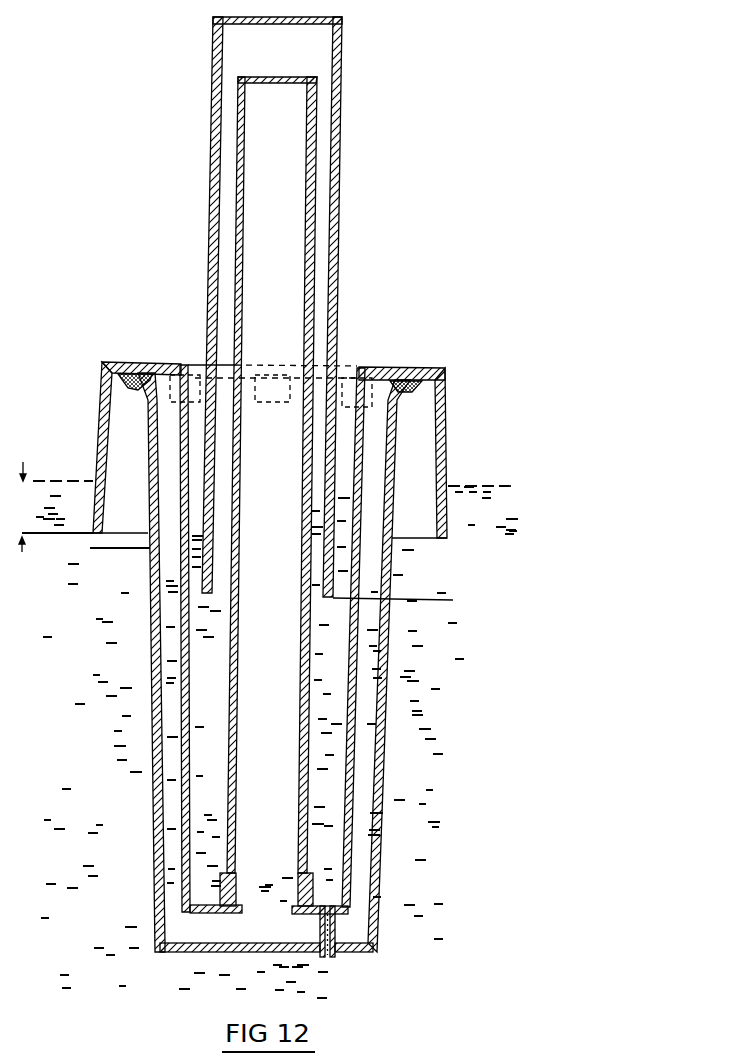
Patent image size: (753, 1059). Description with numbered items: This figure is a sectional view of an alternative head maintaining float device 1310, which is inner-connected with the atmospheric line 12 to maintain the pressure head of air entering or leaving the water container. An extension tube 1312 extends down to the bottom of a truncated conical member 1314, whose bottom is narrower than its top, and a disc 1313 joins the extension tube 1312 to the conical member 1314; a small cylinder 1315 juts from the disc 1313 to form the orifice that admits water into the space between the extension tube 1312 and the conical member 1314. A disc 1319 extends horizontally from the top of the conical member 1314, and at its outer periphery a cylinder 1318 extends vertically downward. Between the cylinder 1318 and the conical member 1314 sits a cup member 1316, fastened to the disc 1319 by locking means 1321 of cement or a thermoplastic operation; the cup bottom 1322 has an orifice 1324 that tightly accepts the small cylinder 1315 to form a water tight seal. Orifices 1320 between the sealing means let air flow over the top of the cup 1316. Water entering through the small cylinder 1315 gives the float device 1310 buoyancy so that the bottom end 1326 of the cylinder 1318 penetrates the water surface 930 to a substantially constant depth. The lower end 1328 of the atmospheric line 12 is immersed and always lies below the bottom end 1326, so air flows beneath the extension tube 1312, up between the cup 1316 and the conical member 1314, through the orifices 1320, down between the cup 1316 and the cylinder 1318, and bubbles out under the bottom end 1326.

The atmospheric line 12 is at (343, 54).
The extension tube 1312 is at (313, 208).
The head maintaining float device 1310 is at (507, 292).
The orifices 1320 is at (268, 385).
The disc 1319 is at (365, 368).
The locking means 1321 is at (122, 380).
The water surface 930 is at (462, 487).
The cylinder 1318 is at (448, 527).
The bottom end 1326 is at (100, 533).
The lower end 1328 is at (414, 609).
The truncated conical member 1314 is at (185, 748).
The cup member 1316 is at (375, 920).
The disc 1313 is at (205, 913).
The bottom 1322 is at (173, 948).
The orifice 1324 is at (343, 958).
The small cylinder 1315 is at (332, 960).